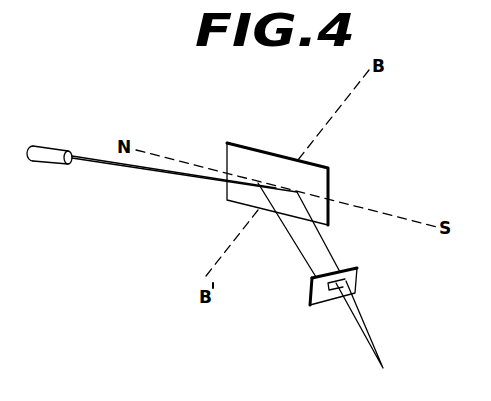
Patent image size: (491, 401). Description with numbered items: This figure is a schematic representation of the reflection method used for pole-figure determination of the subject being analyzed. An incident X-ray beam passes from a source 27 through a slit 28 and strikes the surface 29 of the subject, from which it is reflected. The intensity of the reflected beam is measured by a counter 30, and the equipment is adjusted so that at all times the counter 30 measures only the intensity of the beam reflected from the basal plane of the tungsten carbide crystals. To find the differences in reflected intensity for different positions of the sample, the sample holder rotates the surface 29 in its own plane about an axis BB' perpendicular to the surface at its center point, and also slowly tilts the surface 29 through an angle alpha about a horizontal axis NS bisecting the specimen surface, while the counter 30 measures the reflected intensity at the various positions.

The source 27 is at (365, 340).
The slit 28 is at (345, 280).
The surface 29 is at (305, 175).
The counter 30 is at (50, 163).